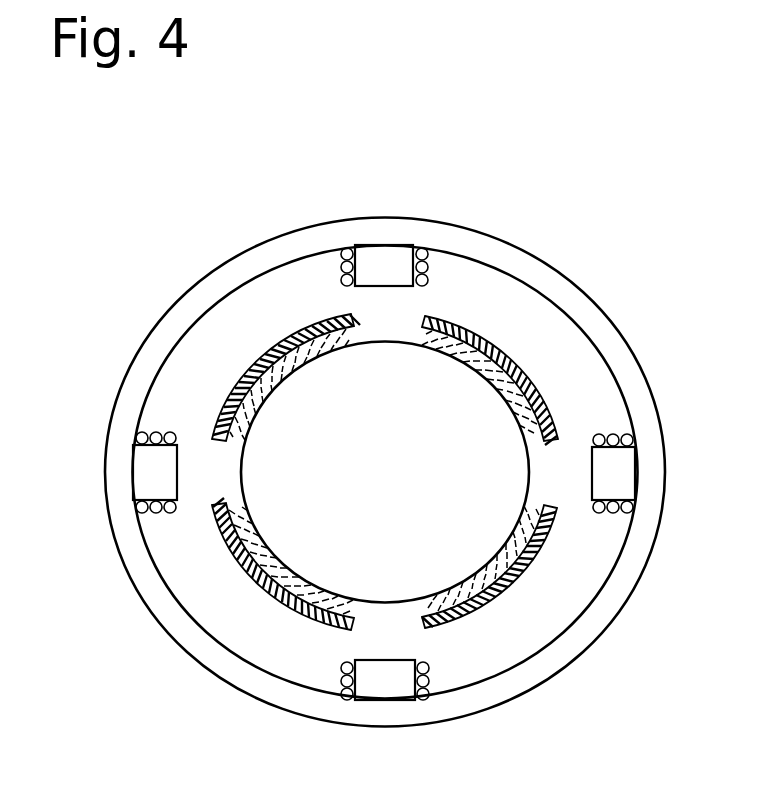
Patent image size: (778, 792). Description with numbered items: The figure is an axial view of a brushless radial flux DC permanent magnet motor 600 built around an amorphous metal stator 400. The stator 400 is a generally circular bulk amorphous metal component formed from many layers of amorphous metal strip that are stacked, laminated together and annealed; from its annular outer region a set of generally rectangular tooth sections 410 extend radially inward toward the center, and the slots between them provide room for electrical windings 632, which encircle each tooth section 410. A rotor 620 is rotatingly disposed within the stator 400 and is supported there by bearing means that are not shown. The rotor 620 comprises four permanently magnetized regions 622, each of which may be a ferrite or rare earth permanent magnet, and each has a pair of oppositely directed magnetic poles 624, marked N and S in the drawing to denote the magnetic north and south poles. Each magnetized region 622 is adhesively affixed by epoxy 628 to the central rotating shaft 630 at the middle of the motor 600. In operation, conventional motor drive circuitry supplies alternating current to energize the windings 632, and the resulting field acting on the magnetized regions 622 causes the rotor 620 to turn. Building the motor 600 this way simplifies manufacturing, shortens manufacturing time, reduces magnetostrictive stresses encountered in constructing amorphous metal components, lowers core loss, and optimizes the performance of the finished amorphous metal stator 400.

The brushless radial flux DC motor 600 is at (543, 146).
The amorphous metal stator 400 is at (645, 438).
The tooth section 410 is at (405, 281).
The electrical windings 632 is at (330, 263).
The rotor 620 is at (520, 355).
The permanently magnetized region 622 is at (228, 400).
The epoxy 628 is at (627, 697).
The central rotating shaft 630 is at (458, 530).
The magnetic poles 624 is at (432, 305).